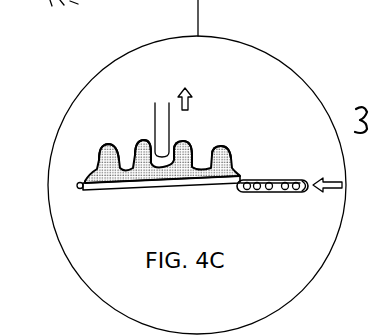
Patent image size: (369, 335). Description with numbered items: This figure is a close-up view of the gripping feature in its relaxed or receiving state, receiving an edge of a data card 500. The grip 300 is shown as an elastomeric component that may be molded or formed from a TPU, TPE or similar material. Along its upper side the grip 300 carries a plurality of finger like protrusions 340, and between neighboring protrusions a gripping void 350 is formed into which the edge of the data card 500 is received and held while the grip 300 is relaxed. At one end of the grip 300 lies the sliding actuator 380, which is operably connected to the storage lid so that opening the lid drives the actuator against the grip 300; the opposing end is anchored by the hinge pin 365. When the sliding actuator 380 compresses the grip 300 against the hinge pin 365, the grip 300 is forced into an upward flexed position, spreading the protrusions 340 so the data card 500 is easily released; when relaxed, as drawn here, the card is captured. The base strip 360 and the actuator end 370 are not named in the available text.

The grip 300 is at (117, 115).
The finger like protrusions 340 is at (143, 142).
The gripping void 350 is at (125, 150).
The substrate strip 360 is at (182, 179).
The hinge pin 365 is at (83, 190).
The connector tip 370 is at (303, 180).
The sliding actuator 380 is at (275, 192).
The data card 500 is at (163, 129).